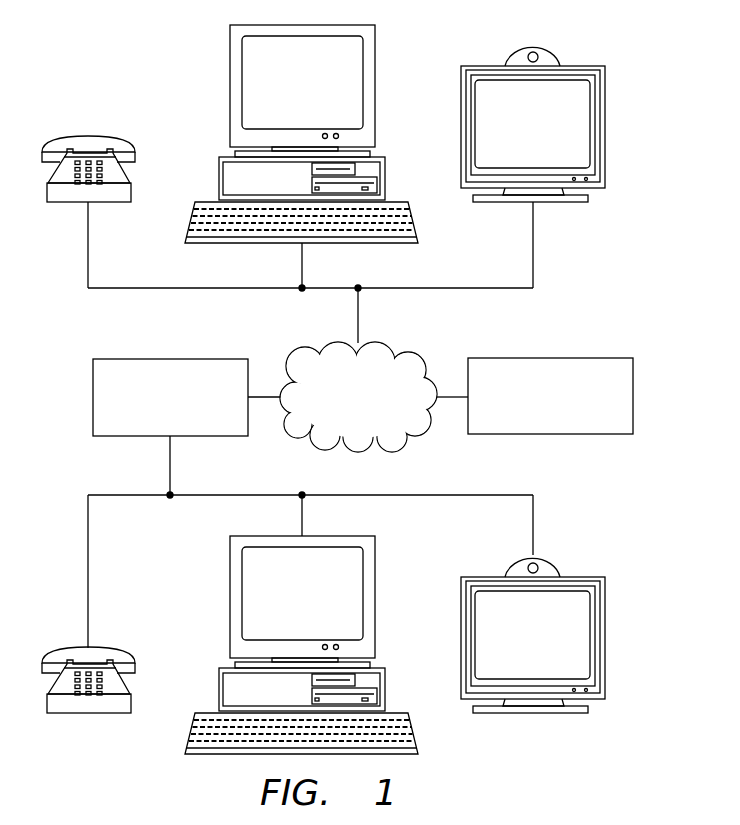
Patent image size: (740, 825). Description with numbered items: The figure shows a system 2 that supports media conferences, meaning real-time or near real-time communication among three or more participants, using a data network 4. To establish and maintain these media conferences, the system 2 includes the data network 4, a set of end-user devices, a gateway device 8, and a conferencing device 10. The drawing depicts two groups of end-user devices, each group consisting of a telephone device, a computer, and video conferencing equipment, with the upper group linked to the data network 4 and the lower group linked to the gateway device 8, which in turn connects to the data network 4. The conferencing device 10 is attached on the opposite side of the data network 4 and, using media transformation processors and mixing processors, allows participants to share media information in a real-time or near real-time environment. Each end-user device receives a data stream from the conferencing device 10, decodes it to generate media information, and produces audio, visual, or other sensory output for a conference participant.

The system 2 is at (364, 405).
The data network 4 is at (298, 360).
The gateway device 8 is at (93, 398).
The conferencing device 10 is at (633, 397).